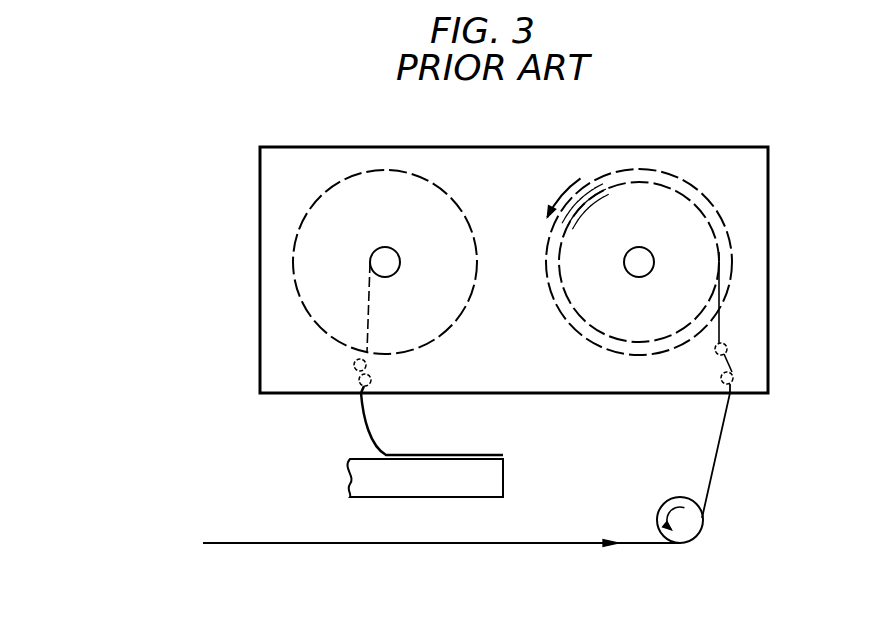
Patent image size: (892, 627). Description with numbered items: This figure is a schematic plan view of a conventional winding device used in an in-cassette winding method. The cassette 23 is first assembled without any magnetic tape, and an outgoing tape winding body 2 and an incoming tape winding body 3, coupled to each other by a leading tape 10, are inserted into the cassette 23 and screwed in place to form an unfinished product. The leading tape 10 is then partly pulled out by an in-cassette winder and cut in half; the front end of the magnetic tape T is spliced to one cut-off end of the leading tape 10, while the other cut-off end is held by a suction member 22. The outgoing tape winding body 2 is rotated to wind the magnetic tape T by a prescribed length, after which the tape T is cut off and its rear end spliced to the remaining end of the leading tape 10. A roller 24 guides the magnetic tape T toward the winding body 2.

The cassette 23 is at (696, 147).
The incoming tape winding body 3 is at (310, 206).
The outgoing tape winding body 2 is at (714, 204).
The leading tape 10 is at (378, 444).
The suction member 22 is at (503, 478).
The roller 24 is at (690, 506).
The magnetic tape T is at (717, 460).